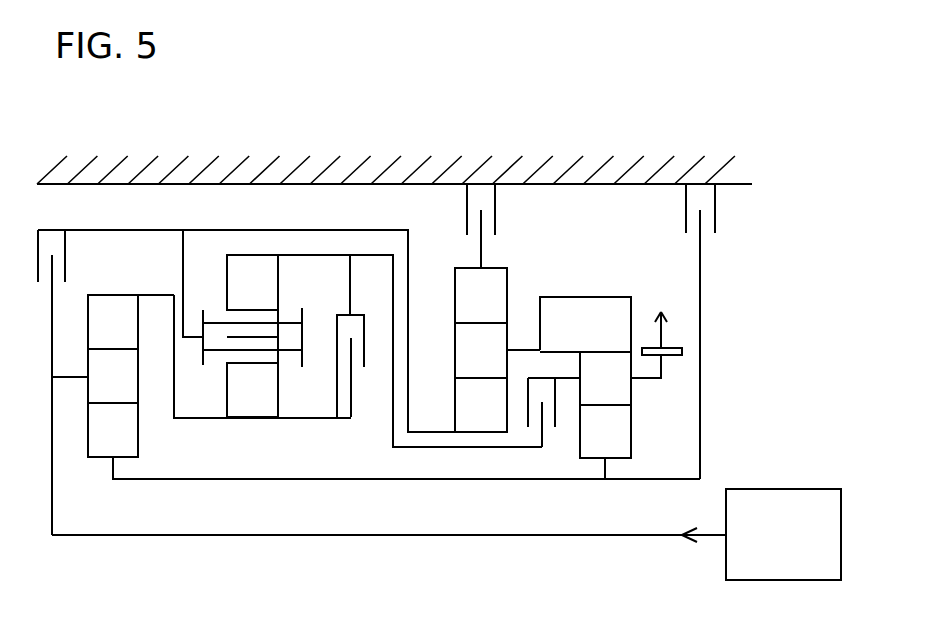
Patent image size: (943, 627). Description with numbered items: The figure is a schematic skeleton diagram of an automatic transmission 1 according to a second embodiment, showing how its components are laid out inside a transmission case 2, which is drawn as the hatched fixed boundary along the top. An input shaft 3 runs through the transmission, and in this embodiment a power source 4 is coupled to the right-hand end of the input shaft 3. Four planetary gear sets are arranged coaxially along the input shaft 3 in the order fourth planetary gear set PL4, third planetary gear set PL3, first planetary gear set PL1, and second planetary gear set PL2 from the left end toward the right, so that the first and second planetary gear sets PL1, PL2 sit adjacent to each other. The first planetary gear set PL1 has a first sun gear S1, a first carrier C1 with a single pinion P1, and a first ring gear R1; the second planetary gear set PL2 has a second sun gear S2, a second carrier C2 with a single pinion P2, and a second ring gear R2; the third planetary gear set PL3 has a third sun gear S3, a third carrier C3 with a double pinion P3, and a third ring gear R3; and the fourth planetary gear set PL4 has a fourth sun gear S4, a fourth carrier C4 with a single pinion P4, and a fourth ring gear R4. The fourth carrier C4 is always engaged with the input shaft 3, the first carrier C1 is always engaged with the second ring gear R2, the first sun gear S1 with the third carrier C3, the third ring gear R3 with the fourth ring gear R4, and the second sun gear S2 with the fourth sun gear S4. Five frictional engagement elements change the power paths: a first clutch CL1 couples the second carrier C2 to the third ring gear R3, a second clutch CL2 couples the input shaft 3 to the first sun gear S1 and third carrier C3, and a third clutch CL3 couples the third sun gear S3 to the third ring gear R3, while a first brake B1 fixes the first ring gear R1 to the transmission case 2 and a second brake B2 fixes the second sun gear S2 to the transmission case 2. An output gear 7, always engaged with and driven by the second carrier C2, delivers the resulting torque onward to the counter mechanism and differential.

The automatic transmission 1 is at (602, 138).
The transmission case 2 is at (318, 164).
The input shaft 3 is at (610, 538).
The power source 4 is at (785, 488).
The output gear 7 is at (673, 358).
The first planetary gear set PL1 is at (499, 262).
The second planetary gear set PL2 is at (623, 290).
The third planetary gear set PL3 is at (256, 257).
The fourth planetary gear set PL4 is at (128, 288).
The first ring gear R1 is at (454, 291).
The single pinion P1 is at (454, 349).
The first sun gear S1 is at (454, 402).
The first carrier C1 is at (521, 349).
The second ring gear R2 is at (590, 297).
The single pinion P2 is at (578, 362).
The second sun gear S2 is at (633, 446).
The second carrier C2 is at (645, 380).
The third ring gear R3 is at (226, 262).
The double pinion P3 is at (279, 358).
The third sun gear S3 is at (226, 401).
The third carrier C3 is at (203, 311).
The fourth ring gear R4 is at (156, 327).
The single pinion P4 is at (156, 381).
The fourth sun gear S4 is at (140, 428).
The fourth carrier C4 is at (70, 376).
The first clutch CL1 is at (559, 438).
The second clutch CL2 is at (67, 248).
The third clutch CL3 is at (327, 357).
The first brake B1 is at (465, 211).
The second brake B2 is at (716, 211).